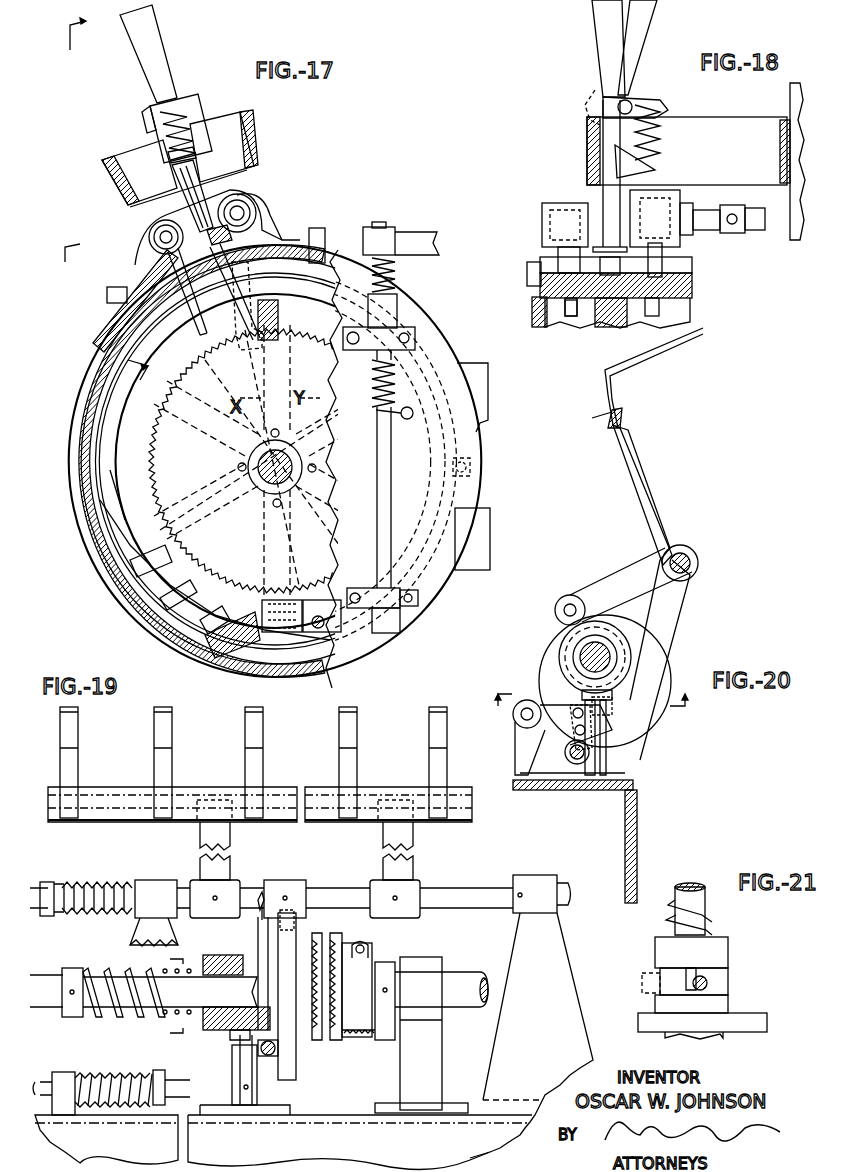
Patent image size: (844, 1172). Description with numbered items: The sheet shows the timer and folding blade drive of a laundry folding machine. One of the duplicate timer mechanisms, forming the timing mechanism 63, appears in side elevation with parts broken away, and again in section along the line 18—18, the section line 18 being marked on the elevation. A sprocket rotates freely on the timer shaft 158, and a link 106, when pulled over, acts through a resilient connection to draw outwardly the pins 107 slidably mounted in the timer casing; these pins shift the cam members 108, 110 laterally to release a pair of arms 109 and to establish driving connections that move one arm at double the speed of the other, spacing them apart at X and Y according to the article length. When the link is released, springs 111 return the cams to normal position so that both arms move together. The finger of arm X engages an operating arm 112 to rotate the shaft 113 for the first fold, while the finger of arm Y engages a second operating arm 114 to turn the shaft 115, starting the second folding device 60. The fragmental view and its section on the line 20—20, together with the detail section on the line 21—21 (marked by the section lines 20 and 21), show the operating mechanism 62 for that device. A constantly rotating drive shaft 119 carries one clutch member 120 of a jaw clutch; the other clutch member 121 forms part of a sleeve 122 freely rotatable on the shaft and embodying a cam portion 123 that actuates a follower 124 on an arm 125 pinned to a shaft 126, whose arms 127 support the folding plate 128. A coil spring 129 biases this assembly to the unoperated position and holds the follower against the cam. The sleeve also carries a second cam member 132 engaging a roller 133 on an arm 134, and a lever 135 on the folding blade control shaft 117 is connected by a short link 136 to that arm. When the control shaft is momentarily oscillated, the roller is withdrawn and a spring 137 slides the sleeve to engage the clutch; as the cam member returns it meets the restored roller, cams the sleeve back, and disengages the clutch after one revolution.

In FIG. 17, the section line 18— 18 is at (106, 202).
In FIG. 19, the section line 20— 20 is at (167, 996).
In FIG. 20, the section line 21— 21 is at (594, 688).
In FIG. 20, the second folding device 60 is at (667, 500).
In FIG. 20, the operating mechanism 62 is at (545, 660).
In FIG. 19, the operating mechanism 62 is at (258, 936).
In FIG. 17, the timing mechanism 63 is at (469, 450).
In FIG. 17, the link 106 is at (425, 232).
In FIG. 17, the pins 107 is at (415, 338).
In FIG. 17, the cam member 108 is at (285, 660).
In FIG. 17, the arms 109 is at (215, 658).
In FIG. 17, the cam member 110 is at (332, 644).
In FIG. 17, the springs 111 is at (376, 412).
In FIG. 17, the operating arm 112 is at (242, 350).
In FIG. 18, the operating arm 112 is at (568, 316).
In FIG. 17, the shaft 113 is at (257, 213).
In FIG. 18, the shaft 113 is at (553, 208).
In FIG. 17, the operating arm 114 is at (205, 343).
In FIG. 18, the operating arm 114 is at (692, 296).
In FIG. 17, the shaft 115 is at (160, 240).
In FIG. 18, the shaft 115 is at (700, 230).
In FIG. 20, the folding blade control shaft 117 is at (590, 755).
In FIG. 19, the folding blade control shaft 117 is at (290, 1090).
In FIG. 20, the drive shaft 119 is at (610, 660).
In FIG. 19, the drive shaft 119 is at (50, 980).
In FIG. 19, the clutch member 120 is at (352, 943).
In FIG. 19, the clutch member 121 is at (317, 938).
In FIG. 19, the sleeve 122 is at (232, 1030).
In FIG. 21, the sleeve 122 is at (722, 950).
In FIG. 20, the cam portion 123 is at (640, 712).
In FIG. 19, the cam portion 123 is at (295, 1065).
In FIG. 20, the follower 124 is at (568, 595).
In FIG. 19, the follower 124 is at (292, 915).
In FIG. 20, the arm 125 is at (614, 582).
In FIG. 19, the arm 125 is at (255, 895).
In FIG. 20, the shaft 126 is at (698, 568).
In FIG. 19, the shaft 126 is at (486, 888).
In FIG. 20, the arms 127 is at (624, 485).
In FIG. 19, the arms 127 is at (410, 875).
In FIG. 20, the folding plate 128 is at (665, 345).
In FIG. 19, the folding plate 128 is at (432, 732).
In FIG. 19, the coil spring 129 is at (96, 884).
In FIG. 20, the cam member 132 is at (630, 690).
In FIG. 19, the cam member 132 is at (236, 1042).
In FIG. 21, the cam member 132 is at (722, 975).
In FIG. 19, the roller 133 is at (278, 1048).
In FIG. 21, the roller 133 is at (710, 984).
In FIG. 20, the arm 134 is at (560, 725).
In FIG. 20, the lever 135 is at (592, 735).
In FIG. 20, the link 136 is at (610, 708).
In FIG. 19, the spring 137 is at (95, 1012).
In FIG. 17, the timer shaft 158 is at (260, 464).